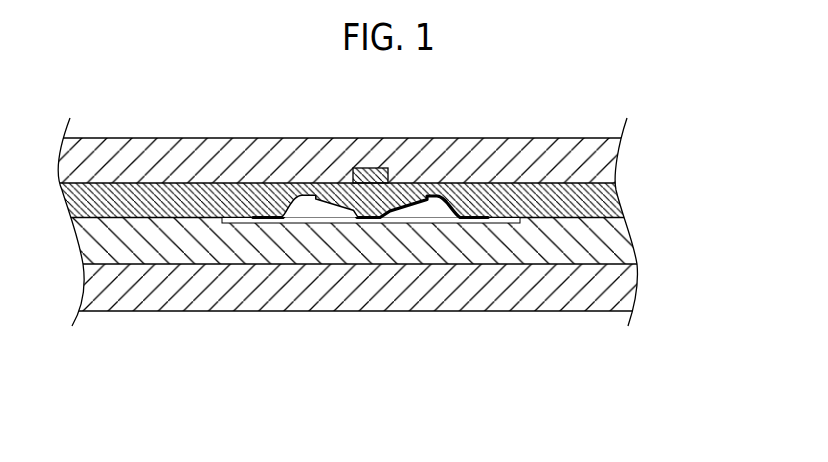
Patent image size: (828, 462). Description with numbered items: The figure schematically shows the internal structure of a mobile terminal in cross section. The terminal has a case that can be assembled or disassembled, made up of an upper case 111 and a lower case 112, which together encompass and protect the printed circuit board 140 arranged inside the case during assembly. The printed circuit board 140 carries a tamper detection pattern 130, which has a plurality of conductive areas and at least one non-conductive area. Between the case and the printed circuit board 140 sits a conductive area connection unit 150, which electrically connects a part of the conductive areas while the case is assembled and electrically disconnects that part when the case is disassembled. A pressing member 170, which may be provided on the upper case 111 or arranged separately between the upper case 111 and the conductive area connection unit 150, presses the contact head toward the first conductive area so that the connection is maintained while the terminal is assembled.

The upper case 111 is at (595, 163).
The lower case 112 is at (613, 288).
The tamper detection pattern 130 is at (408, 221).
The printed circuit board 140 is at (613, 243).
The conductive area connection unit 150 is at (305, 180).
The pressing member 170 is at (613, 200).